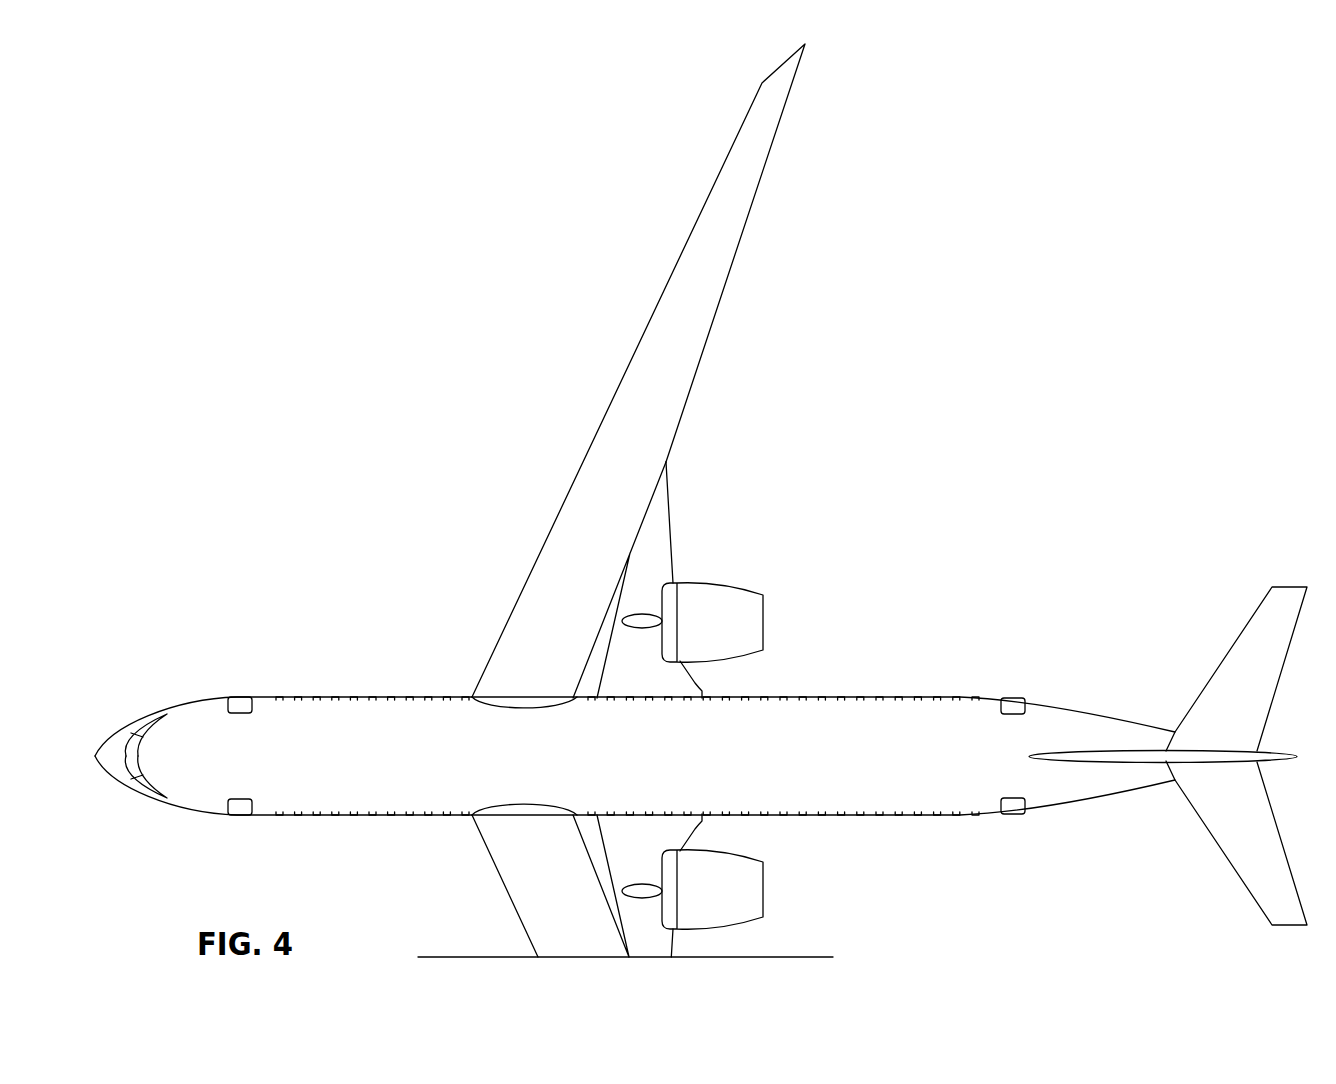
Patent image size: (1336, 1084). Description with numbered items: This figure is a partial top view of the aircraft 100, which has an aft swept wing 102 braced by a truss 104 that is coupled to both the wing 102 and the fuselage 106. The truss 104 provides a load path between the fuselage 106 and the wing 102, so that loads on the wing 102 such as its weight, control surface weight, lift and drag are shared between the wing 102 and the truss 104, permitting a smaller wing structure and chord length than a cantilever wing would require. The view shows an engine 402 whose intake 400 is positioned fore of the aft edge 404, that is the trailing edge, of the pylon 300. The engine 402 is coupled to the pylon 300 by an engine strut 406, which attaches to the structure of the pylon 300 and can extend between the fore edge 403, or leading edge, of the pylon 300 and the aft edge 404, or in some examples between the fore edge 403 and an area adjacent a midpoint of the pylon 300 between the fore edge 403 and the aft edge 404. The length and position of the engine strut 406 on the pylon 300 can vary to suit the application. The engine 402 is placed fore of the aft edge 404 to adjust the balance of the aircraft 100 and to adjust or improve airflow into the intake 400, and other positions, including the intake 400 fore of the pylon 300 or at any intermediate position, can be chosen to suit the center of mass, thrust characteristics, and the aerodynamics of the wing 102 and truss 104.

The aircraft 100 is at (1097, 422).
The aft swept wing 102 is at (643, 336).
The truss 104 is at (668, 502).
The fuselage 106 is at (848, 698).
The pylon 300 is at (681, 676).
The intake 400 is at (662, 636).
The engine 402 is at (753, 626).
The fore edge 403 is at (621, 586).
The aft edge 404 is at (668, 537).
The engine strut 406 is at (645, 622).